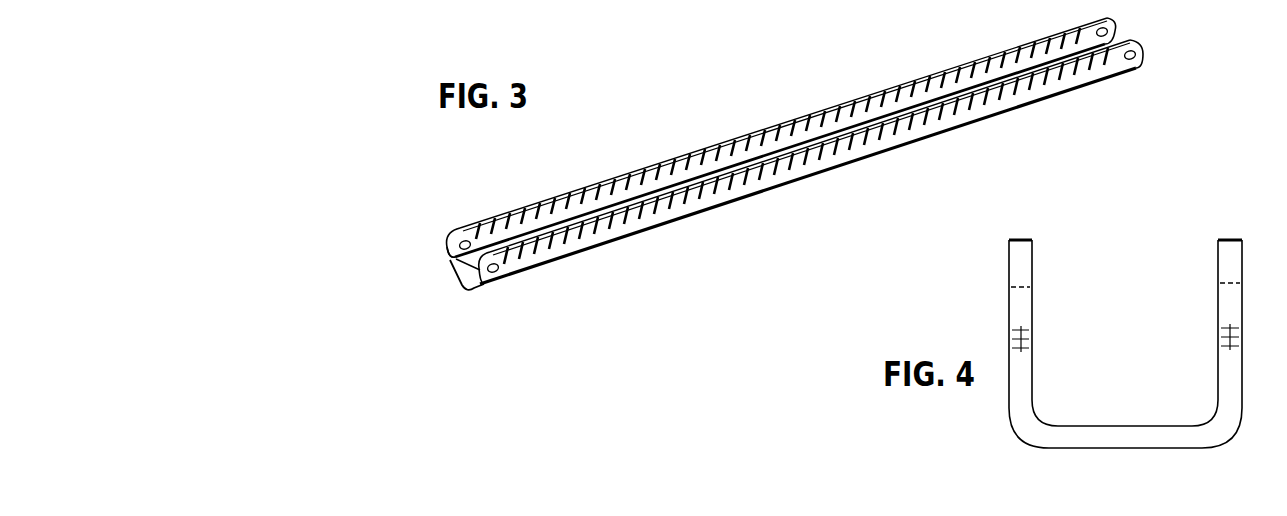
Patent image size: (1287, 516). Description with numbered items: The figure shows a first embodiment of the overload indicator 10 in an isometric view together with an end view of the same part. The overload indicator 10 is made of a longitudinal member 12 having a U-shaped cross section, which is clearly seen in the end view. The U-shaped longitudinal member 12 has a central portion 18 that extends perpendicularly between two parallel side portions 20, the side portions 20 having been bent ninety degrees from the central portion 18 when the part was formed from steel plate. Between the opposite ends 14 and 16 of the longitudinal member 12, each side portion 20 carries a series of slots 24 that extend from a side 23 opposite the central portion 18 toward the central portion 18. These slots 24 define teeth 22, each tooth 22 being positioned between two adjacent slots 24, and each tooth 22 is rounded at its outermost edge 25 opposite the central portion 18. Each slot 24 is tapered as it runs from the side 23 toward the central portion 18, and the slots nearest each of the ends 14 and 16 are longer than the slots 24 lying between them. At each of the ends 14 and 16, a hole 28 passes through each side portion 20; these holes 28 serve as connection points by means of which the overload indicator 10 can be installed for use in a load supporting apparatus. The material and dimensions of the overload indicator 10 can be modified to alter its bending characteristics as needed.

In FIG. 3, the overload indicator 10 is at (784, 173).
In FIG. 3, the longitudinal member 12 is at (822, 166).
In FIG. 4, the longitudinal member 12 is at (1008, 336).
In FIG. 3, the end 14 is at (456, 283).
In FIG. 3, the end 16 is at (1112, 32).
In FIG. 3, the central portion 18 is at (467, 290).
In FIG. 4, the central portion 18 is at (1117, 428).
In FIG. 3, the side portions 20 is at (673, 197).
In FIG. 4, the side portions 20 is at (1233, 300).
In FIG. 3, the teeth 22 is at (792, 125).
In FIG. 3, the side 23 is at (802, 136).
In FIG. 4, the side 23 is at (1100, 317).
In FIG. 3, the slots 24 is at (958, 104).
In FIG. 3, the outermost edge 25 is at (533, 213).
In FIG. 3, the hole 28 is at (1136, 68).